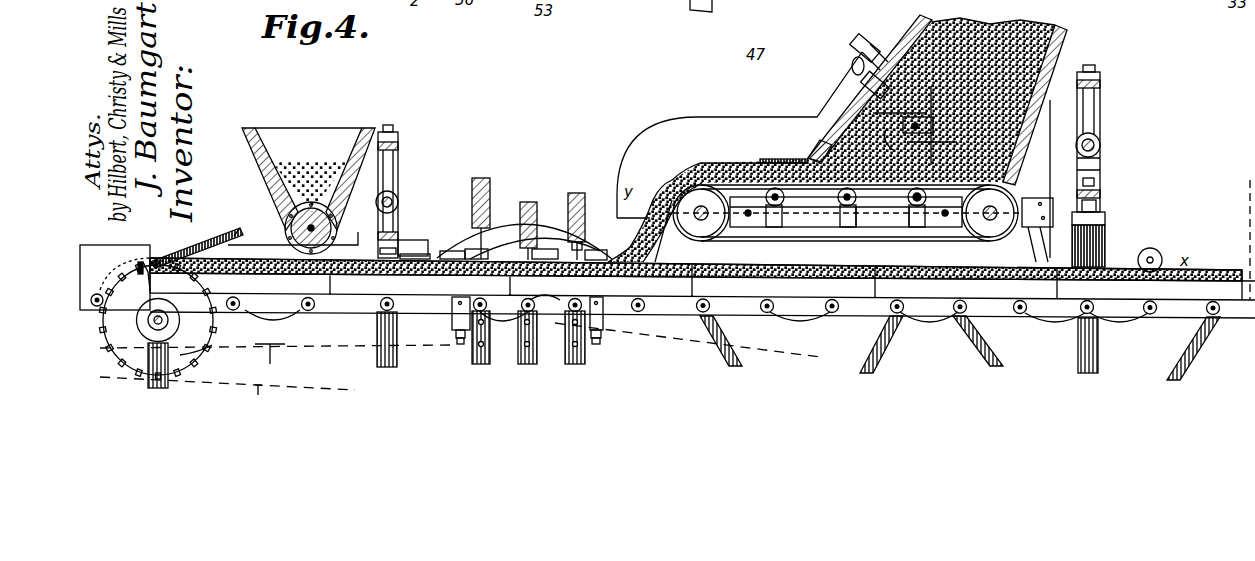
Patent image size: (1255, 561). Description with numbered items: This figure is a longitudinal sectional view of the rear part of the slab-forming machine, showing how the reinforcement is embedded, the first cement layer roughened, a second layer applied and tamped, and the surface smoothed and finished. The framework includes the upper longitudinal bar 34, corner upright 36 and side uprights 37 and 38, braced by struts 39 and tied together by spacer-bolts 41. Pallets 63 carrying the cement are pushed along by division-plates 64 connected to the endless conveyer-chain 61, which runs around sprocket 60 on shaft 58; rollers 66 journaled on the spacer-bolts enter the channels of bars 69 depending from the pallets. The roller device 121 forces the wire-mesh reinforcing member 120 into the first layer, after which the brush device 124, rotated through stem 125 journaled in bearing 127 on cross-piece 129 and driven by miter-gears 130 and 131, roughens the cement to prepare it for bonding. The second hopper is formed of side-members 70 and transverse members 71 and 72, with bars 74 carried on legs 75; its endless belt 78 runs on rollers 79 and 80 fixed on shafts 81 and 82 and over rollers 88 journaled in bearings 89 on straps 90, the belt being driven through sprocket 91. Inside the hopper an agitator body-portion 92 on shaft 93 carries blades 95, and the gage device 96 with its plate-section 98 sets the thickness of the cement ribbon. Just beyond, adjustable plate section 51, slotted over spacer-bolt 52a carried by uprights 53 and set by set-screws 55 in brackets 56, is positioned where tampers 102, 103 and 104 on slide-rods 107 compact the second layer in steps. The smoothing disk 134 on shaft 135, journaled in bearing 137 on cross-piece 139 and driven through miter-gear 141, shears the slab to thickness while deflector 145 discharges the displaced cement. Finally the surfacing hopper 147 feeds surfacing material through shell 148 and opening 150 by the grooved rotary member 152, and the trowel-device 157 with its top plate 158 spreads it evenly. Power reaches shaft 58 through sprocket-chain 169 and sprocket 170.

The longitudinally-extending bar 34 is at (134, 252).
The upright bar 36 is at (145, 364).
The upright bar 37 is at (378, 348).
The upright bar 38 is at (1098, 352).
The strut 39 is at (1196, 352).
The spacer-bolt 41 is at (1135, 316).
The vertically adjustable section 51 is at (496, 250).
The spacer-bolt 52a is at (555, 300).
The upright 53 is at (570, 352).
The set-screw 55 is at (596, 345).
The depending bracket 56 is at (600, 318).
The shaft 58 is at (152, 326).
The sprocket 60 is at (140, 326).
The endless conveyer-chain 61 is at (320, 346).
The pallet 63 is at (206, 284).
The division-plate 64 is at (1242, 270).
The roller 66 is at (1092, 310).
The bar 69 is at (1050, 300).
The side-member 70 is at (722, 117).
The transversely-disposed member 71 is at (1060, 46).
The transversely-disposed member 72 is at (915, 25).
The bar 74 is at (882, 217).
The leg 75 is at (1035, 235).
The endless belt 78 is at (987, 213).
The roller 79 is at (707, 200).
The roller 80 is at (1037, 203).
The shaft 81 is at (700, 213).
The shaft 82 is at (1012, 200).
The roller 88 is at (786, 198).
The bearing 89 is at (905, 198).
The strap 90 is at (846, 212).
The sprocket 91 is at (862, 90).
The body-portion 92 is at (936, 118).
The shaft 93 is at (934, 125).
The blade 95 is at (900, 121).
The gage device 96 is at (812, 152).
The plate-section 98 is at (790, 160).
The tamper 102 is at (577, 193).
The tamper 103 is at (528, 202).
The tamper 104 is at (481, 178).
The slide-rod 107 is at (600, 233).
The reinforcing member 120 is at (800, 278).
The roller device 121 is at (1166, 260).
The brush device 124 is at (1105, 221).
The stem 125 is at (1090, 114).
The bearing 127 is at (1096, 70).
The cross-piece 129 is at (1100, 86).
The miter-gear 130 is at (1100, 157).
The miter-gear 131 is at (1112, 134).
The smoothing disk 134 is at (428, 258).
The shaft 135 is at (398, 160).
The bearing 137 is at (386, 125).
The cross-piece 139 is at (398, 140).
The miter-gear 141 is at (398, 200).
The deflector 145 is at (410, 240).
The hopper 147 is at (313, 130).
The cylindrical shell 148 is at (303, 205).
The opening 150 is at (325, 205).
The rotatable cylindrical member 152 is at (290, 228).
The trowel-device 157 is at (236, 228).
The top plate 158 is at (190, 250).
The sprocket-chain 169 is at (256, 392).
The sprocket 170 is at (200, 350).